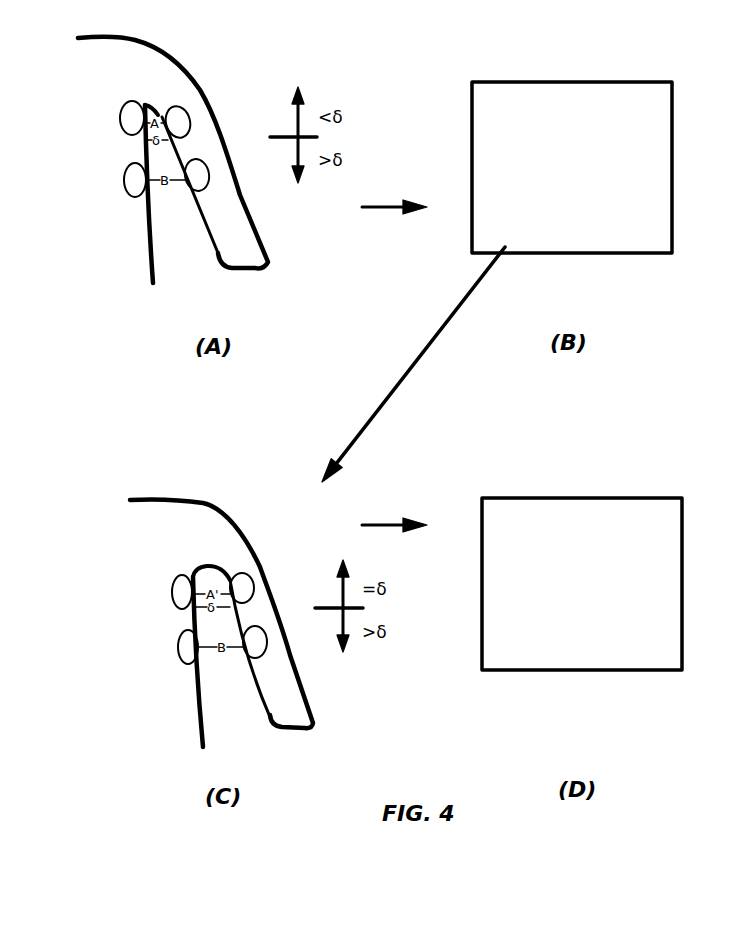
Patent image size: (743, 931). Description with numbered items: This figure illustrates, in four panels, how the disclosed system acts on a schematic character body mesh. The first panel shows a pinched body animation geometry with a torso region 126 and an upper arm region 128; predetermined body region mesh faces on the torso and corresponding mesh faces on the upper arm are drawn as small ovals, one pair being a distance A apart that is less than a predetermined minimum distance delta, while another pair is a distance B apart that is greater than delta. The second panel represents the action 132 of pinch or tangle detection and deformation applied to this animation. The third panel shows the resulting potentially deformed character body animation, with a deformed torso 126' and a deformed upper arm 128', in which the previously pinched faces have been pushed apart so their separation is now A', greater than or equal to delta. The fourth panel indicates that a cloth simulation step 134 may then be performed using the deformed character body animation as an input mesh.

The torso region 126 is at (153, 194).
The deformed torso 126' is at (174, 656).
The upper arm region 128 is at (199, 153).
The deformed upper arm 128' is at (255, 613).
The action of pinch or tangle detection and deformation 132 is at (672, 177).
The cloth simulation step 134 is at (682, 595).